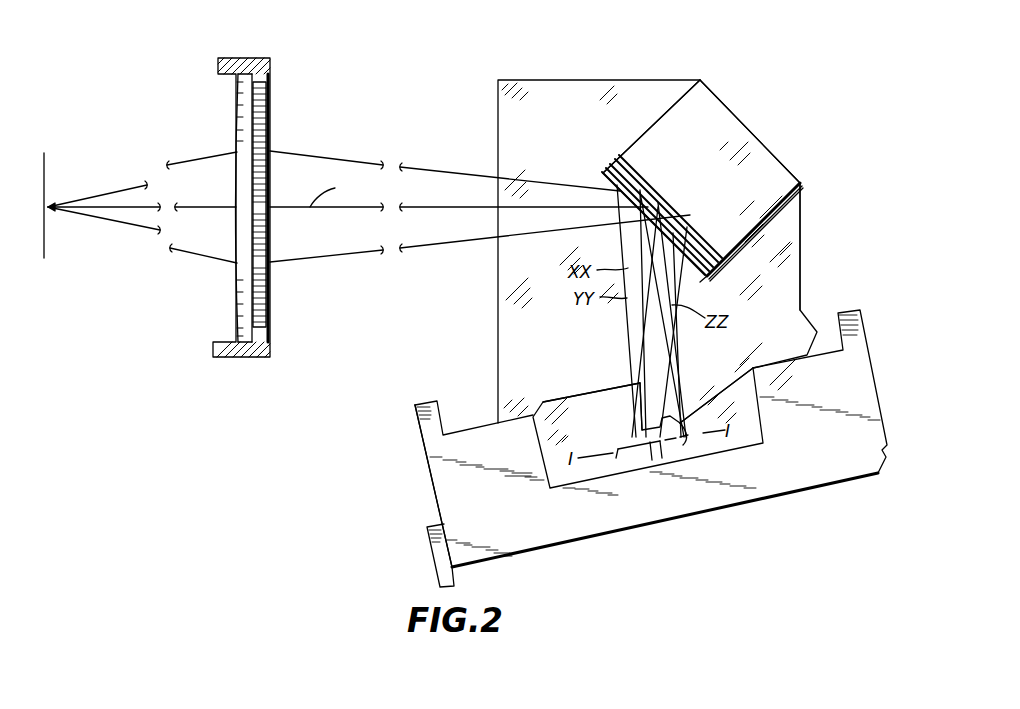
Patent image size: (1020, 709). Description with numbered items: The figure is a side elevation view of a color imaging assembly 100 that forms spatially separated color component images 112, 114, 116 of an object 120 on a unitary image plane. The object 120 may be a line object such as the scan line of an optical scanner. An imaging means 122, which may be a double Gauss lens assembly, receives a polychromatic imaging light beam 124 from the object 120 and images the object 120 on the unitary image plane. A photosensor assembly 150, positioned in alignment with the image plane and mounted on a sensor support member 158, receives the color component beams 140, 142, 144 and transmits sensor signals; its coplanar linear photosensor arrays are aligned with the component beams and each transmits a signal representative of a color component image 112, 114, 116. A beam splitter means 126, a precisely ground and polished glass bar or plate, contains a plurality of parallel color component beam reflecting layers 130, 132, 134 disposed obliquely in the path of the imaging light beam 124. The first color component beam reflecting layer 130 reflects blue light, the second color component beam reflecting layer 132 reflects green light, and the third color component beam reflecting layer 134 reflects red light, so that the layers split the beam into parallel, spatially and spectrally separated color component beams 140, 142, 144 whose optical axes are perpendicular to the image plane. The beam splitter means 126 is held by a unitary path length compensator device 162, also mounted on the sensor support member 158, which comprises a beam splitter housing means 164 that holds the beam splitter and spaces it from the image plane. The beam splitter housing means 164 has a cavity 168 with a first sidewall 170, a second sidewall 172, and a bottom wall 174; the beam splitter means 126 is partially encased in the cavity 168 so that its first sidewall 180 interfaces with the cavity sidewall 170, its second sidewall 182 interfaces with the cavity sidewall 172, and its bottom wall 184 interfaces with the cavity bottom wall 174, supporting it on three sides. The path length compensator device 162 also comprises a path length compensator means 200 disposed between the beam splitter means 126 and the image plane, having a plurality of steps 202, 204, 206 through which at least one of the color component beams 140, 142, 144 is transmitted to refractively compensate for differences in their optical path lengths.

The color imaging assembly 100 is at (392, 373).
The color component image 112 is at (640, 437).
The color component image 114 is at (639, 471).
The color component image 116 is at (681, 423).
The object 120 is at (50, 184).
The imaging means 122 is at (282, 90).
The polychromatic imaging light beam 124 is at (300, 168).
The beam splitter means 126 is at (765, 157).
The first color component beam reflecting layer 130 is at (610, 175).
The second color component beam reflecting layer 132 is at (618, 168).
The third color component beam reflecting layer 134 is at (656, 183).
The color component beam 140 is at (640, 322).
The color component beam 142 is at (650, 345).
The color component beam 144 is at (680, 337).
The photosensor assembly 150 is at (678, 473).
The sensor support member 158 is at (435, 473).
The path length compensator device 162 is at (480, 323).
The beam splitter housing means 164 is at (735, 103).
The cavity 168 is at (724, 160).
The first sidewall 170 is at (672, 99).
The second sidewall 172 is at (748, 221).
The bottom wall 174 is at (705, 272).
The first sidewall 180 is at (672, 99).
The second sidewall 182 is at (748, 221).
The bottom wall 184 is at (700, 282).
The path length compensator means 200 is at (735, 400).
The step 202 is at (622, 386).
The step 204 is at (652, 410).
The step 206 is at (693, 433).